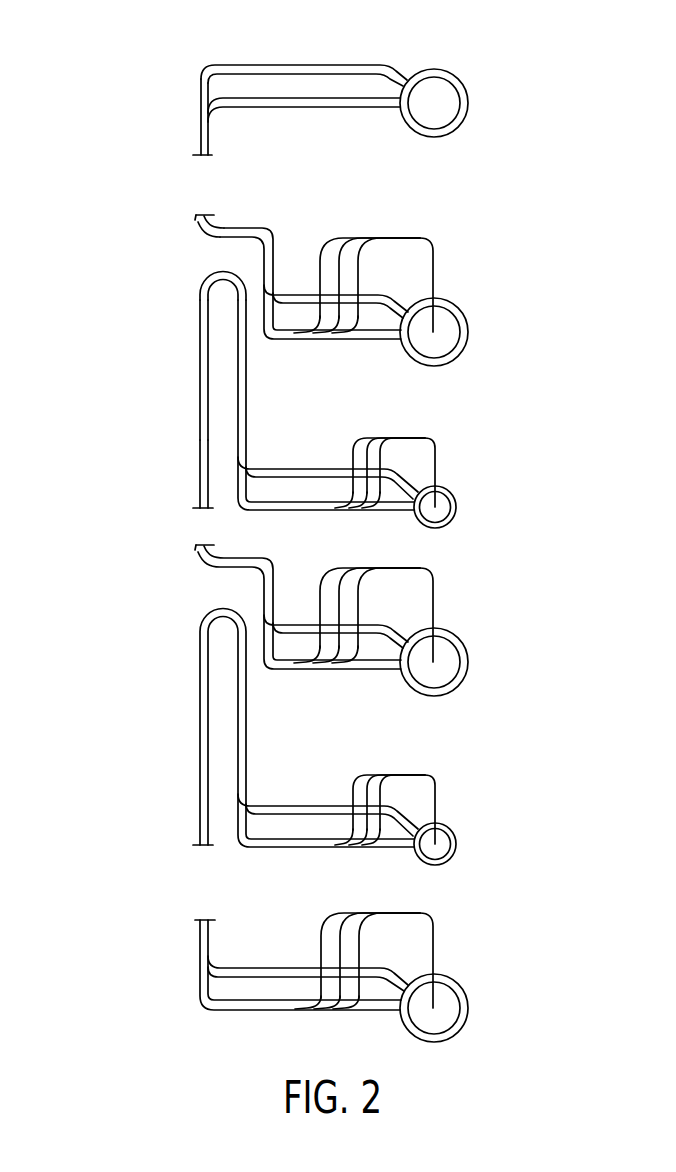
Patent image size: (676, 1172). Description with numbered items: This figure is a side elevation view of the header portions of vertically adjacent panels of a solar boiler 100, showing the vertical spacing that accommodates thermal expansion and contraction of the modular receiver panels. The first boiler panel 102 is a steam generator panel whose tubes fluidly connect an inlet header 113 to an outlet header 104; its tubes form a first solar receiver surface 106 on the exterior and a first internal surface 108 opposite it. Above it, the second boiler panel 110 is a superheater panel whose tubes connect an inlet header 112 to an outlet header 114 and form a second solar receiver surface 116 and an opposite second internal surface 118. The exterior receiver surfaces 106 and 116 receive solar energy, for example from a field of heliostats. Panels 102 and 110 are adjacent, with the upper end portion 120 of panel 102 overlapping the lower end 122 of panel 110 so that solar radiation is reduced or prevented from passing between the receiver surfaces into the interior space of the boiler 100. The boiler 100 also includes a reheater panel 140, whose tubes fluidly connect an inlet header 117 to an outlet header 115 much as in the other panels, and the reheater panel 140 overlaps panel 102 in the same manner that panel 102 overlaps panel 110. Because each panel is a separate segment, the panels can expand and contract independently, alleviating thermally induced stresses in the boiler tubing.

The solar boiler 100 is at (90, 82).
The first boiler panel 102 is at (200, 478).
The outlet header 104 is at (455, 501).
The first solar receiver surface 106 is at (200, 383).
The first internal surface 108 is at (208, 492).
The second boiler panel 110 is at (198, 218).
The inlet header 112 is at (467, 323).
The inlet header 113 is at (467, 653).
The outlet header 114 is at (467, 113).
The outlet header 115 is at (455, 837).
The second solar receiver surface 116 is at (201, 136).
The inlet header 117 is at (467, 998).
The second internal surface 118 is at (208, 137).
The upper end portion 120 is at (200, 310).
The lower end 122 is at (274, 262).
The reheater panel 140 is at (200, 745).